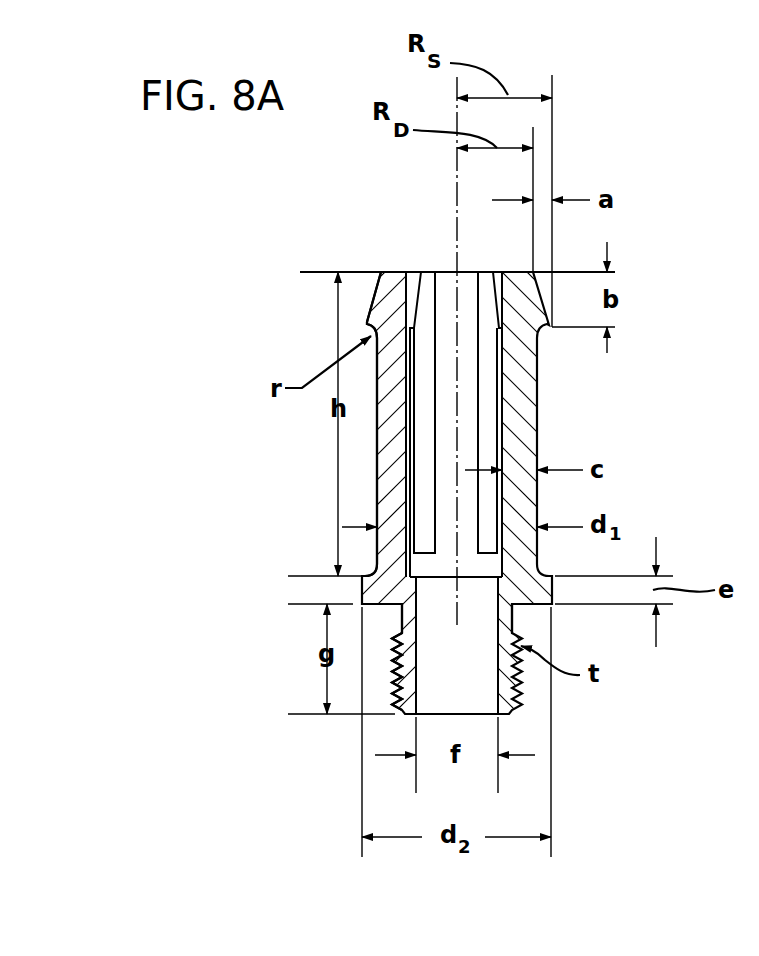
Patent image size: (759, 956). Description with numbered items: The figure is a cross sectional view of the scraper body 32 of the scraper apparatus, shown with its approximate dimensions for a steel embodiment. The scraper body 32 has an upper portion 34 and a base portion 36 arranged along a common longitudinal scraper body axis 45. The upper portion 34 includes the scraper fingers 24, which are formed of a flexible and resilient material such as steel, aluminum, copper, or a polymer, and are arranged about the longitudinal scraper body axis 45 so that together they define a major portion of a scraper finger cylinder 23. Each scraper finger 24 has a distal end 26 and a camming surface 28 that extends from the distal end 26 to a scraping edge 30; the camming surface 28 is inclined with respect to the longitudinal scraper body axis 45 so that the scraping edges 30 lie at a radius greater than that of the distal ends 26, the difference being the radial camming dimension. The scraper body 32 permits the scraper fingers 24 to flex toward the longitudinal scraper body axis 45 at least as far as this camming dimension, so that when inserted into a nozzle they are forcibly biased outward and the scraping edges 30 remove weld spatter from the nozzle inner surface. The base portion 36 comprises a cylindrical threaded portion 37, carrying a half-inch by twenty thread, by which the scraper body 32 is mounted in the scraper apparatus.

The scraper finger cylinder 23 is at (636, 376).
The scraper fingers 24 is at (443, 268).
The distal end 26 is at (386, 268).
The camming surface 28 is at (368, 305).
The scraping edge 30 is at (372, 330).
The scraper body 32 is at (377, 570).
The upper portion 34 is at (246, 459).
The base portion 36 is at (269, 640).
The cylindrical threaded portion 37 is at (395, 657).
The longitudinal scraper body axis 45 is at (455, 592).